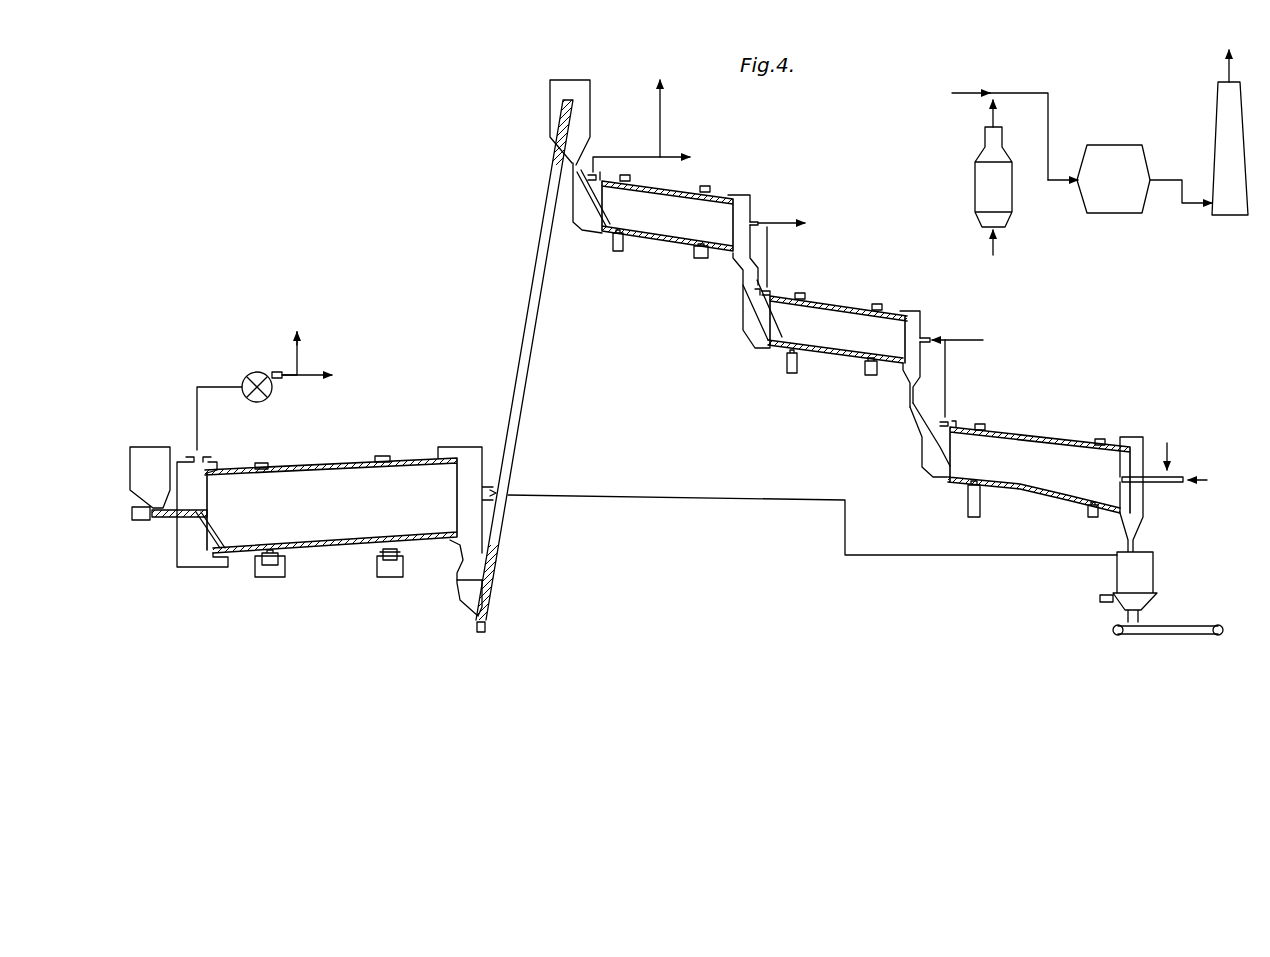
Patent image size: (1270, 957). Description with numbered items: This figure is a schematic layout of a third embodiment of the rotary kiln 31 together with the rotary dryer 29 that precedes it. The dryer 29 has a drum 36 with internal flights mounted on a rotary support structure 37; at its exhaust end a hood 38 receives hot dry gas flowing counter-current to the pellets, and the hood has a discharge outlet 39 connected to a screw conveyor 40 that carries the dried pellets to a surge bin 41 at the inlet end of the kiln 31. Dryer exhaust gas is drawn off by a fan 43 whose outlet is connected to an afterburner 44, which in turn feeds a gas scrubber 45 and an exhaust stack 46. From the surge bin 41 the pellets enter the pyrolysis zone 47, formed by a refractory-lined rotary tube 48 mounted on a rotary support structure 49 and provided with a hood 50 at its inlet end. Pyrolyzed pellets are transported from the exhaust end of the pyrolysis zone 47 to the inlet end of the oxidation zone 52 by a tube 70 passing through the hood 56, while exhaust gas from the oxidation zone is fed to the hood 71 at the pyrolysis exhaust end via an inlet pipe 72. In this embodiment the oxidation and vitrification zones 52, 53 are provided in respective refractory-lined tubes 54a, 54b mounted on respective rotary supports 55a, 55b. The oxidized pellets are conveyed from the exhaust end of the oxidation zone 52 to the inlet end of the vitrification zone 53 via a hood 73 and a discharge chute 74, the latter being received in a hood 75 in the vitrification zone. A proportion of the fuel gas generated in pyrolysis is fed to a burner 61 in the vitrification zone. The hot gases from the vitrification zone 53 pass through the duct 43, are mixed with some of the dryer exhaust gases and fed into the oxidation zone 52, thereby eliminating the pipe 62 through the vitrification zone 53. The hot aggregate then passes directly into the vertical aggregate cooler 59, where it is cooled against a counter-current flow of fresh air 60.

The rotary dryer 29 is at (347, 452).
The rotary kiln 31 is at (970, 573).
The drum 36 is at (332, 556).
The rotary support structure 37 is at (385, 578).
The hood 38 is at (462, 447).
The discharge outlet 39 is at (468, 597).
The screw conveyor 40 is at (528, 375).
The surge bin 41 is at (573, 88).
The fan 43 is at (1056, 350).
The afterburner 44 is at (985, 188).
The gas scrubber 45 is at (1127, 233).
The exhaust stack 46 is at (1227, 203).
The pyrolysis zone 47 is at (654, 217).
The rotary tube 48 is at (675, 246).
The rotary support structure 49 is at (701, 259).
The hood 50 is at (583, 222).
The oxidation zone 52 is at (825, 322).
The vitrification zone 53 is at (1040, 452).
The refractory-lined tube 54a is at (840, 362).
The refractory-lined tube 54b is at (1023, 487).
The rotary support 55a is at (787, 366).
The rotary support 55b is at (968, 503).
The hood 56 is at (986, 130).
The aggregate cooler 59 is at (1117, 572).
The fresh air 60 is at (893, 557).
The burner 61 is at (655, 158).
The pipe 62 is at (338, 374).
The tube 70 is at (742, 298).
The hood 71 is at (747, 193).
The inlet pipe 72 is at (756, 221).
The hood 73 is at (905, 311).
The discharge chute 74 is at (910, 410).
The hood 75 is at (957, 417).